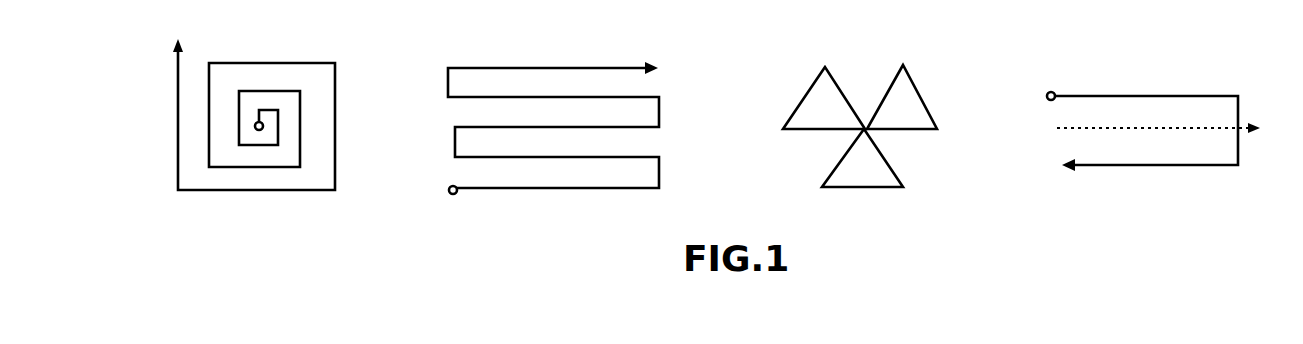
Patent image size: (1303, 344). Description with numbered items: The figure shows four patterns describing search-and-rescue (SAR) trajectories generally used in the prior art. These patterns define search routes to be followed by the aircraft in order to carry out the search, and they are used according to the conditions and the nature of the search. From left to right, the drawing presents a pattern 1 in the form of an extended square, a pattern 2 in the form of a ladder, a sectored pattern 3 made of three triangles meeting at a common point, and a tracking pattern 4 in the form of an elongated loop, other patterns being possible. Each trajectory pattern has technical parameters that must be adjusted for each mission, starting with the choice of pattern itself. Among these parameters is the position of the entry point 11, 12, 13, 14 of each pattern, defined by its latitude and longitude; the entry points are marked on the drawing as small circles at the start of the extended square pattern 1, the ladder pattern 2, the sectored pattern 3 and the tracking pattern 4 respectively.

The extended square pattern 1 is at (335, 173).
The entry point 11 is at (256, 130).
The ladder pattern 2 is at (659, 170).
The entry point 12 is at (449, 191).
The sectored pattern 3 is at (923, 100).
The entry point 13 is at (866, 132).
The tracking pattern 4 is at (1138, 166).
The entry point 14 is at (1051, 92).